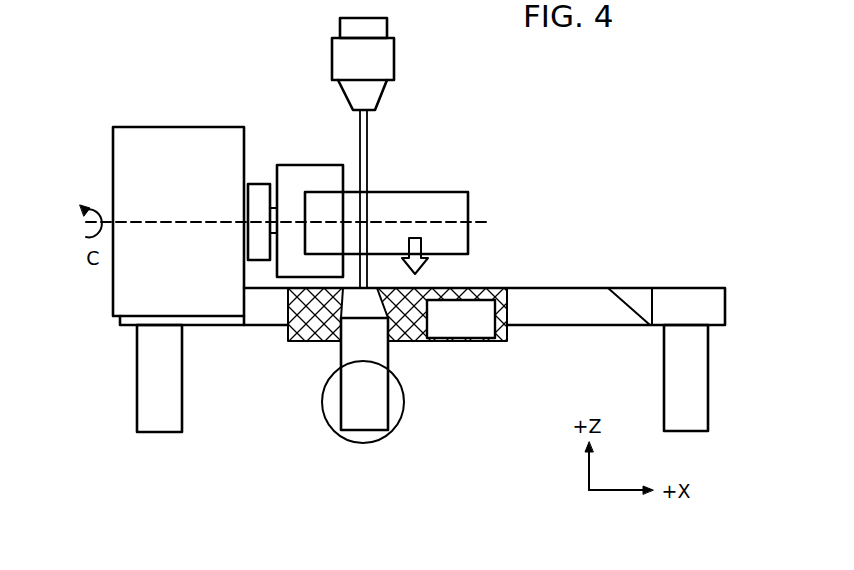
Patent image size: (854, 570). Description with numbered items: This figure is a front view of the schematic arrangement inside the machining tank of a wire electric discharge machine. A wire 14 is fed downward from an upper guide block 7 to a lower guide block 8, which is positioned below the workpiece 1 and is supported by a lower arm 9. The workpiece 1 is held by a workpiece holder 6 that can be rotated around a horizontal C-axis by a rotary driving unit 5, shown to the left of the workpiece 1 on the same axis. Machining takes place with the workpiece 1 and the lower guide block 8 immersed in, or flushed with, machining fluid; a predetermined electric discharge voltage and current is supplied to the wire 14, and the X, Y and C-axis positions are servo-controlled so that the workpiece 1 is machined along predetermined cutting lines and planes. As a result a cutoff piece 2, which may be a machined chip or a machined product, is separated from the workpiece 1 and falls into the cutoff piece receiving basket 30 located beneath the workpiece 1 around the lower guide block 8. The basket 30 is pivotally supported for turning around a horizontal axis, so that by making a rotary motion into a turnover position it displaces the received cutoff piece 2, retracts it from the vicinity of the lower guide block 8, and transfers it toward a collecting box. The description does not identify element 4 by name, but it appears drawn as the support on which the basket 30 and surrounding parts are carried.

The workpiece 1 is at (443, 198).
The cutoff piece 2 is at (472, 310).
The table 4 is at (681, 296).
The rotary driving unit 5 is at (182, 137).
The workpiece holder 6 is at (309, 172).
The upper guide block 7 is at (385, 58).
The lower guide block 8 is at (365, 420).
The lower arm 9 is at (394, 410).
The wire 14 is at (368, 127).
The cutoff piece receiving basket 30 is at (410, 342).